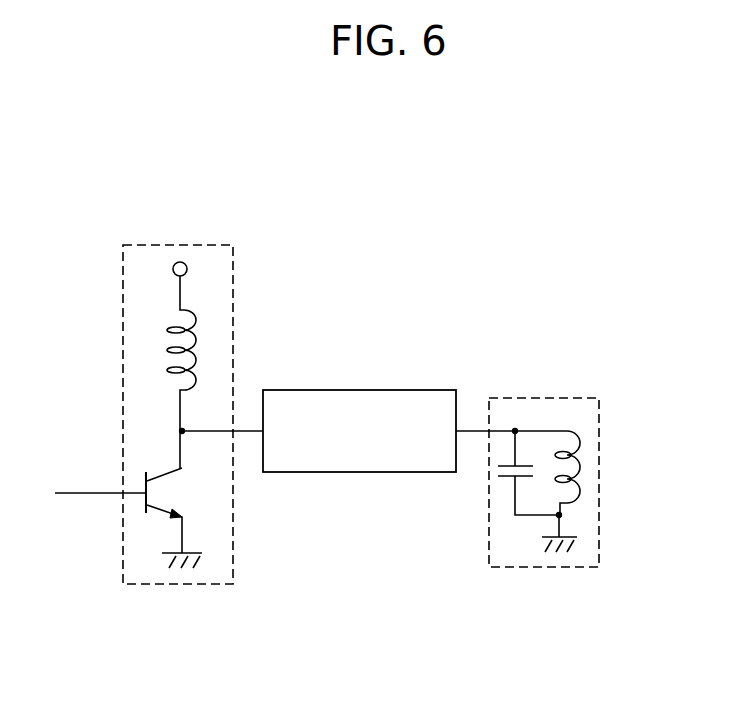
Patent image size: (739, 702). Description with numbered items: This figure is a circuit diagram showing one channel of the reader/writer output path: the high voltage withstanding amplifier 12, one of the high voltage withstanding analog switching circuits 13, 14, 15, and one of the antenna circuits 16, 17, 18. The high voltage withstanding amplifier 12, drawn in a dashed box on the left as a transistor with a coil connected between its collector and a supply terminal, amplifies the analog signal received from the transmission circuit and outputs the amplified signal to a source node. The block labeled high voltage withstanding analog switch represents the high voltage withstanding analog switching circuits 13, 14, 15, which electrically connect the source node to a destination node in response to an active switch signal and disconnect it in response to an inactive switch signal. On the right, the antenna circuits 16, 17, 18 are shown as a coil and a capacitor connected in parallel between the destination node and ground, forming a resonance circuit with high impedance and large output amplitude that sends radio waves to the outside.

The high voltage withstanding amplifier 12 is at (233, 273).
The high voltage withstanding analog switching circuit 13 is at (389, 403).
The high voltage withstanding analog switching circuit 14 is at (389, 403).
The high voltage withstanding analog switching circuit 15 is at (338, 390).
The antenna circuit 16 is at (585, 453).
The antenna circuit 17 is at (585, 453).
The antenna circuit 18 is at (550, 398).